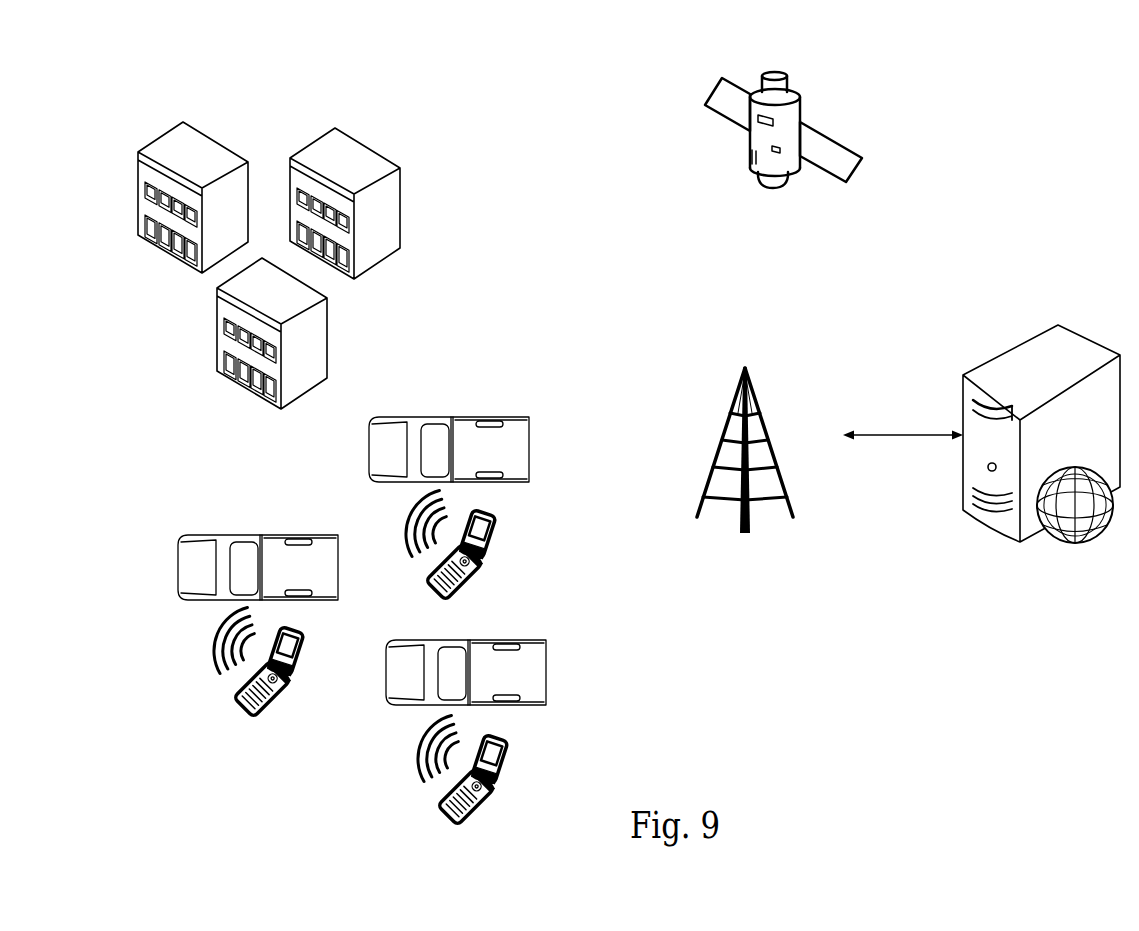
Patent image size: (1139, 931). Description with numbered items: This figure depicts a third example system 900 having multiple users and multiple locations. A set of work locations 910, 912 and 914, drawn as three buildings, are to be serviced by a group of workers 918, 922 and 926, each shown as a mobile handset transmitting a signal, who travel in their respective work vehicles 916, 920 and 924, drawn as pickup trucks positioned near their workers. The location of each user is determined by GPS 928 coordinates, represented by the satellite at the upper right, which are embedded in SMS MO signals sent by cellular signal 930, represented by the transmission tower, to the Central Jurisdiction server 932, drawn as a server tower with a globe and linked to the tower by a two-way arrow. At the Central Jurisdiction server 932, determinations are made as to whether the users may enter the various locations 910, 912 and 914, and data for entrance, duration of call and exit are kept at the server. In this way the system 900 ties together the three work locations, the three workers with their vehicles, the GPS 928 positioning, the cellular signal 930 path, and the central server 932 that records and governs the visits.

The wireless communication system 900 is at (540, 90).
The work location 910 is at (192, 125).
The work location 912 is at (322, 130).
The work location 914 is at (332, 328).
The work vehicle 916 is at (180, 543).
The worker 918 is at (215, 670).
The work vehicle 920 is at (531, 443).
The worker 922 is at (497, 550).
The work vehicle 924 is at (548, 670).
The worker 926 is at (515, 773).
The GPS 928 is at (860, 128).
The cellular signal 930 is at (747, 285).
The Central Jurisdiction server 932 is at (1042, 325).